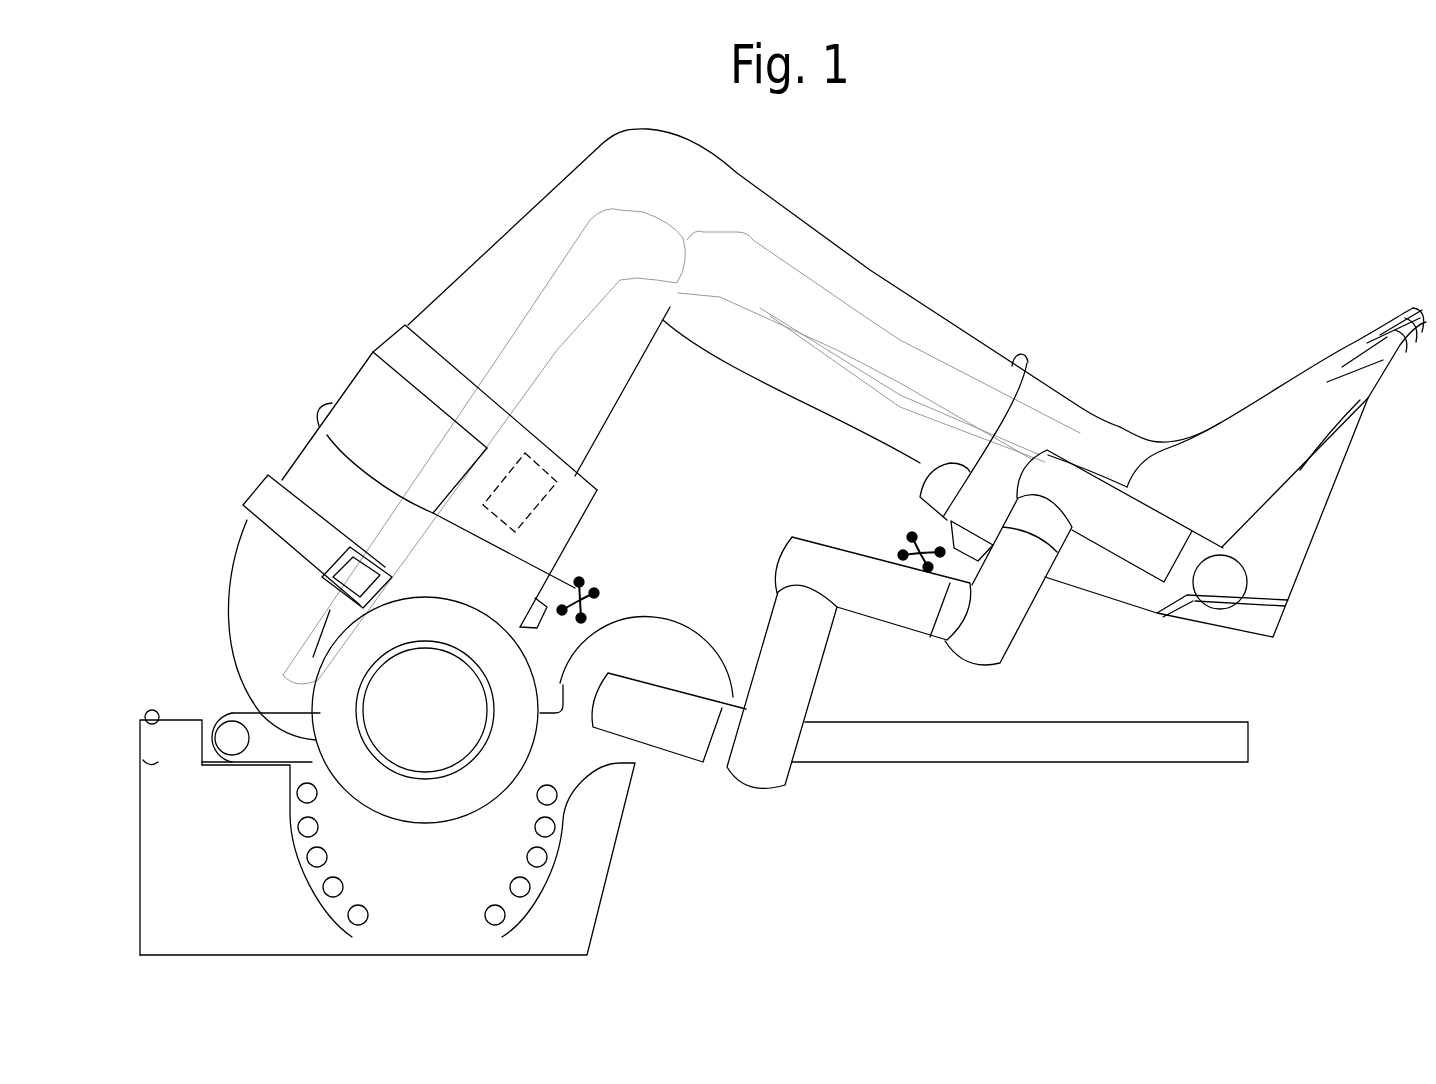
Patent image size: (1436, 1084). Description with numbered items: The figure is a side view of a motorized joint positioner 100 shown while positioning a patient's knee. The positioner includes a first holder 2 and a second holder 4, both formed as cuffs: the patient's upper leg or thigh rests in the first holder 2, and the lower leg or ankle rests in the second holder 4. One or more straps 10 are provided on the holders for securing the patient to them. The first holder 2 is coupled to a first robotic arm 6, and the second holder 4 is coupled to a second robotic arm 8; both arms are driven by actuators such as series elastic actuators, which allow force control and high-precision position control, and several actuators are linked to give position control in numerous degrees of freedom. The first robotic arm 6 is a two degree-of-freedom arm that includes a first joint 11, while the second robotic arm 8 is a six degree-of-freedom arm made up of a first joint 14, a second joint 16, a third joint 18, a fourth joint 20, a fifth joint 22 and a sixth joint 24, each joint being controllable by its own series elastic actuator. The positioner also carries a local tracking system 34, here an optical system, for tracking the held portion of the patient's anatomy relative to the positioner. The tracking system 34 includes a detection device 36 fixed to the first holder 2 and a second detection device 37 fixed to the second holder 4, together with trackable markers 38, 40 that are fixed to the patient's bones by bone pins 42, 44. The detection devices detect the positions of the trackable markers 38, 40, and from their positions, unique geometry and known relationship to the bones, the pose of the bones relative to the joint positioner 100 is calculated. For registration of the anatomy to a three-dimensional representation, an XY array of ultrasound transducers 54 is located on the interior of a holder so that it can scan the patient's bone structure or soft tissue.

The first holder 2 is at (565, 510).
The second holder 4 is at (1300, 548).
The first robotic arm 6 is at (428, 745).
The second robotic arm 8 is at (872, 591).
The straps 10 is at (397, 340).
The first joint 11 is at (343, 694).
The first joint 14 is at (667, 733).
The second joint 16 is at (780, 645).
The third joint 18 is at (886, 603).
The fourth joint 20 is at (1000, 620).
The fifth joint 22 is at (1134, 545).
The sixth joint 24 is at (1218, 593).
The local tracking system 34 is at (657, 584).
The detection device 36 is at (545, 615).
The second detection device 37 is at (990, 548).
The trackable marker 38 is at (596, 601).
The trackable marker 40 is at (907, 547).
The bone pin 42 is at (322, 402).
The bone pin 44 is at (1027, 352).
The XY array of ultrasound transducers 54 is at (548, 458).
The motorized joint positioner 100 is at (852, 810).